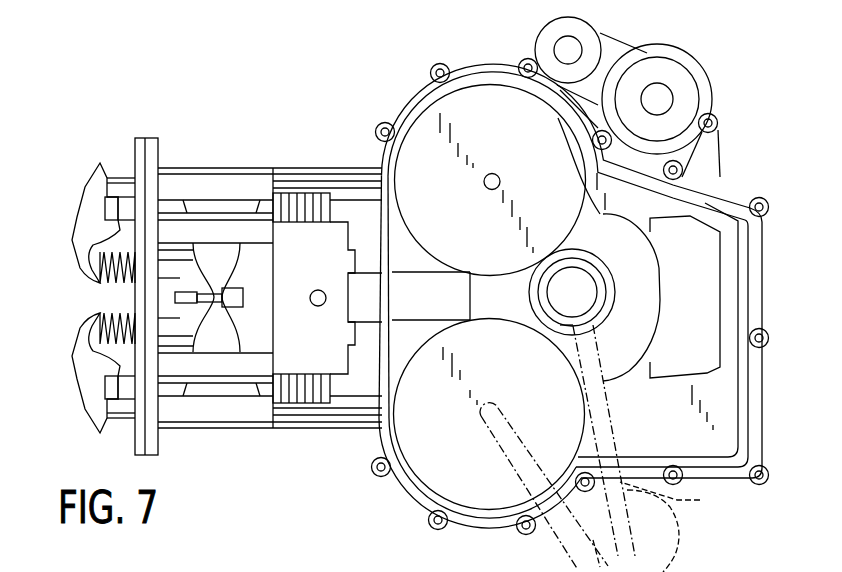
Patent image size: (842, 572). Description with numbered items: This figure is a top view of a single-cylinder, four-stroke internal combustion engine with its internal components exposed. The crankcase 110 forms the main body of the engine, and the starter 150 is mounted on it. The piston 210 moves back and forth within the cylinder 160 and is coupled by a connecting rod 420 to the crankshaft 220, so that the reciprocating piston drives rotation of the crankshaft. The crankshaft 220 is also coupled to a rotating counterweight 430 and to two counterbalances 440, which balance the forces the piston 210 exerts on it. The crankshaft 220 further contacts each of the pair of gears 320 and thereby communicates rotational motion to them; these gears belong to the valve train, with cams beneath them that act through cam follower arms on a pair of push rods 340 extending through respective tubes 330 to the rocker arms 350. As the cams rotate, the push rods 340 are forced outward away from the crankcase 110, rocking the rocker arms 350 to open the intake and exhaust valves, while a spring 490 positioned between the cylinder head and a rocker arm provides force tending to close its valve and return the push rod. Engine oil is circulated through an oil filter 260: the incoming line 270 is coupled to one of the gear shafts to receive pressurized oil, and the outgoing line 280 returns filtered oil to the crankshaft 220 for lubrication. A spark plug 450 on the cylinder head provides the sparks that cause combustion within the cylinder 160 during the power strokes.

The crankcase 110 is at (723, 180).
The starter 150 is at (683, 50).
The cylinder 160 is at (288, 193).
The piston 210 is at (337, 233).
The crankshaft 220 is at (605, 322).
The oil filter 260 is at (683, 543).
The incoming line 270 is at (553, 537).
The outgoing line 280 is at (680, 498).
The gears 320 is at (477, 83).
The tubes 330 is at (217, 165).
The push rods 340 is at (358, 182).
The rocker arms 350 is at (80, 192).
The connecting rod 420 is at (365, 323).
The rotating counterweight 430 is at (605, 225).
The counterbalances 440 is at (707, 217).
The spark plug 450 is at (177, 289).
The spring 490 is at (90, 284).